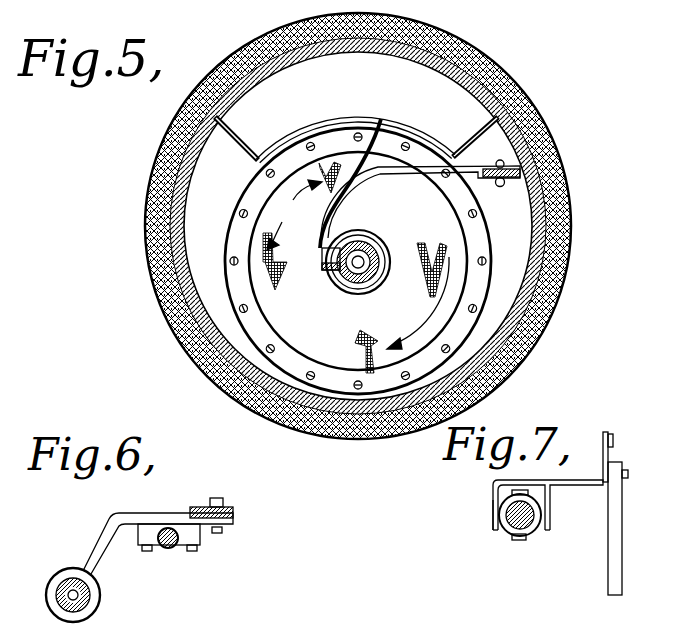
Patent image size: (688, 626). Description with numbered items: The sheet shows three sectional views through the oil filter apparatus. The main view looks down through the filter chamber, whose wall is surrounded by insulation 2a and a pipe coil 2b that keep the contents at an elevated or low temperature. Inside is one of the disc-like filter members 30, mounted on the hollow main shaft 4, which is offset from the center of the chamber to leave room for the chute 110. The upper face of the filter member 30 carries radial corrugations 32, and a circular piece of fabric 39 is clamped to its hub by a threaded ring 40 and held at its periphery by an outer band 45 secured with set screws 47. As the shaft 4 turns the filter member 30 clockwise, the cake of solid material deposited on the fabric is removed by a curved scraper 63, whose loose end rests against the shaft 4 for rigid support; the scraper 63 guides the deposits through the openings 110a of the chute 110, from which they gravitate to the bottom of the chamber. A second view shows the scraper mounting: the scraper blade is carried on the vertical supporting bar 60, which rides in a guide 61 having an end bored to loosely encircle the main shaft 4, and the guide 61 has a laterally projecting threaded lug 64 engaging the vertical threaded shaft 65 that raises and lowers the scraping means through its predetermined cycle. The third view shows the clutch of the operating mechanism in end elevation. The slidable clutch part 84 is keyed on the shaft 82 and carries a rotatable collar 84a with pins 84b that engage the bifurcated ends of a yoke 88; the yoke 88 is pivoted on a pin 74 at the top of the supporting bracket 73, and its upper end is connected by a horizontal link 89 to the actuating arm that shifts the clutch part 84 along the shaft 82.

In FIG. 5, the insulation 2a is at (158, 173).
In FIG. 5, the surrounding pipe coil 2b is at (152, 227).
In FIG. 5, the main shaft 4 is at (372, 273).
In FIG. 6, the main shaft 4 is at (64, 585).
In FIG. 5, the filter member 30 is at (224, 243).
In FIG. 5, the radial corrugations 32 is at (358, 264).
In FIG. 5, the fabric 39 is at (270, 270).
In FIG. 5, the threaded ring 40 is at (369, 238).
In FIG. 5, the outer band 45 is at (486, 236).
In FIG. 5, the set screws 47 is at (478, 211).
In FIG. 5, the vertical supporting bar 60 is at (514, 178).
In FIG. 6, the vertical supporting bar 60 is at (234, 510).
In FIG. 6, the guide 61 is at (130, 518).
In FIG. 5, the scraper 63 is at (385, 120).
In FIG. 6, the threaded lug 64 is at (200, 540).
In FIG. 6, the vertical threaded shaft 65 is at (166, 547).
In FIG. 7, the supporting bracket 73 is at (623, 543).
In FIG. 7, the pin 74 is at (628, 473).
In FIG. 7, the shaft 82 is at (505, 528).
In FIG. 7, the slidable clutch part 84 is at (537, 532).
In FIG. 7, the rotatable collar 84a is at (519, 541).
In FIG. 7, the pins 84b is at (492, 517).
In FIG. 7, the yoke 88 is at (587, 480).
In FIG. 7, the horizontal link 89 is at (613, 434).
In FIG. 5, the chute 110 is at (231, 140).
In FIG. 5, the openings 110a is at (325, 121).